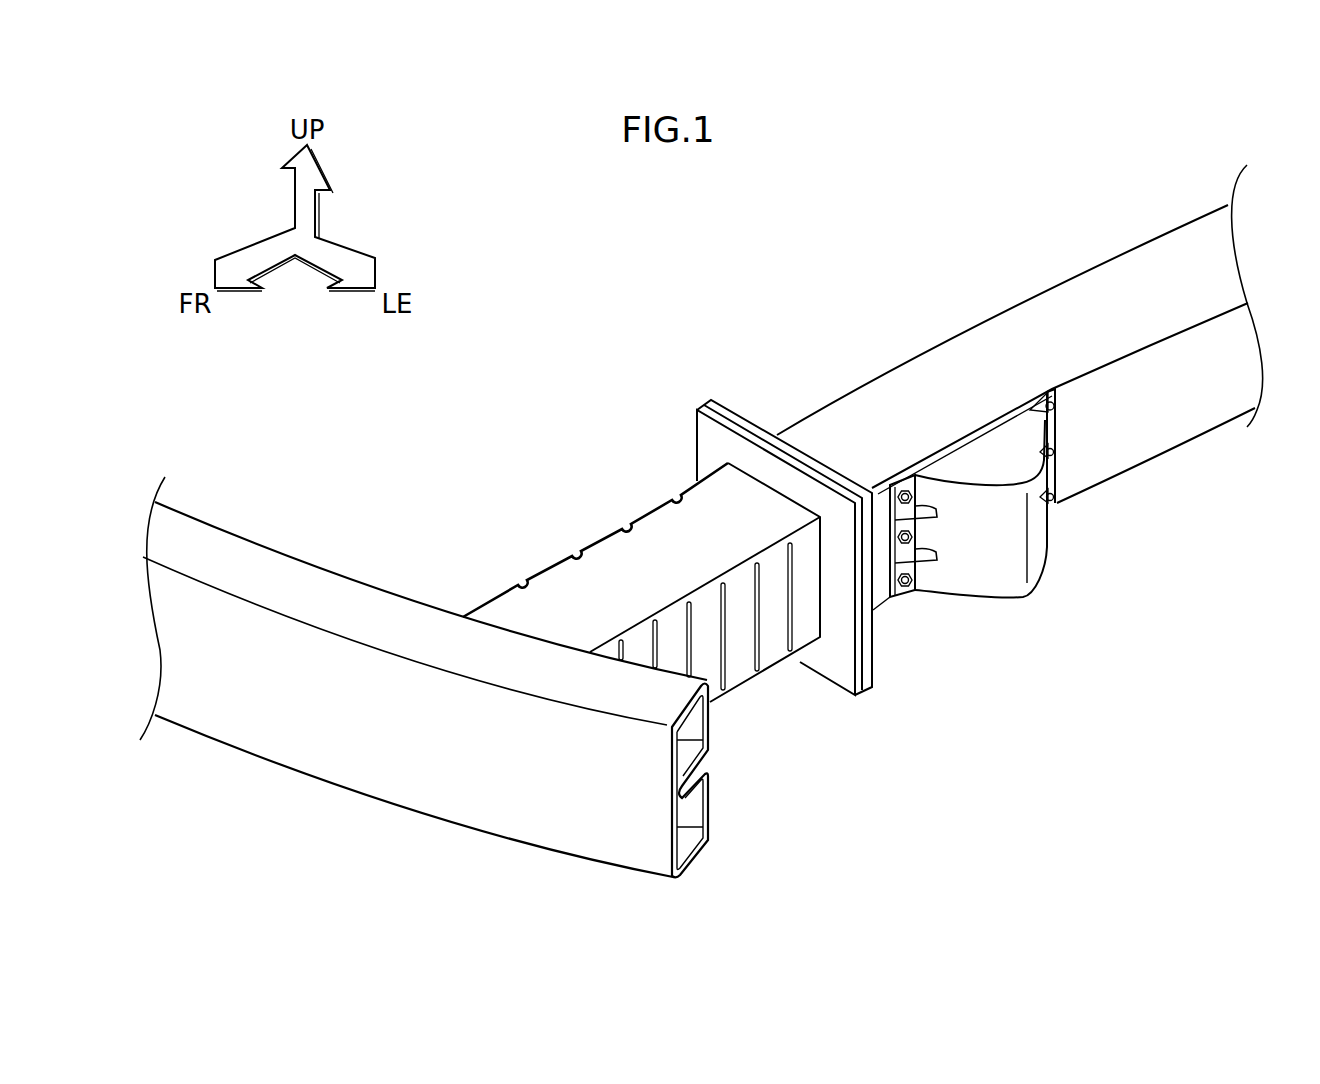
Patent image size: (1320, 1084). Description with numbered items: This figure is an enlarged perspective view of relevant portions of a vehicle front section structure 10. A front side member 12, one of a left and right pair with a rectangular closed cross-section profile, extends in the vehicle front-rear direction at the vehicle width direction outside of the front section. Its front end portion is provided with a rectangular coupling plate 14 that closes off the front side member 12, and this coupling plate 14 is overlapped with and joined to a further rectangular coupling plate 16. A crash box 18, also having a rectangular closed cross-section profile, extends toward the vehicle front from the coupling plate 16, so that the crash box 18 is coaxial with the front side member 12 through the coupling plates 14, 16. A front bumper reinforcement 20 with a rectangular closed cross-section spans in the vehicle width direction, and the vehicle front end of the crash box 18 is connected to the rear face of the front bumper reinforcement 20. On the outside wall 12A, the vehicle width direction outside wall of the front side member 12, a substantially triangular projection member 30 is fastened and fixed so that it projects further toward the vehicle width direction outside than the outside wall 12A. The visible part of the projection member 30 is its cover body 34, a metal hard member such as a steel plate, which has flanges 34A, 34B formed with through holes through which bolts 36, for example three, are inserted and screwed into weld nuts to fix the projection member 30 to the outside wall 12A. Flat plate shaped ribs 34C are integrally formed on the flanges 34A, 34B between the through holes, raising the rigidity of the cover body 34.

The vehicle front section structure 10 is at (998, 657).
The front side member 12 is at (967, 357).
The outside wall 12A is at (1190, 417).
The coupling plate 14 is at (740, 417).
The coupling plate 16 is at (710, 445).
The crash box 18 is at (607, 562).
The front bumper reinforcement 20 is at (303, 747).
The projection member 30 is at (1010, 554).
The cover body 34 is at (1005, 578).
The flange 34A is at (898, 578).
The flange 34B is at (1053, 433).
The rib 34C is at (932, 565).
The bolt 36 is at (907, 492).